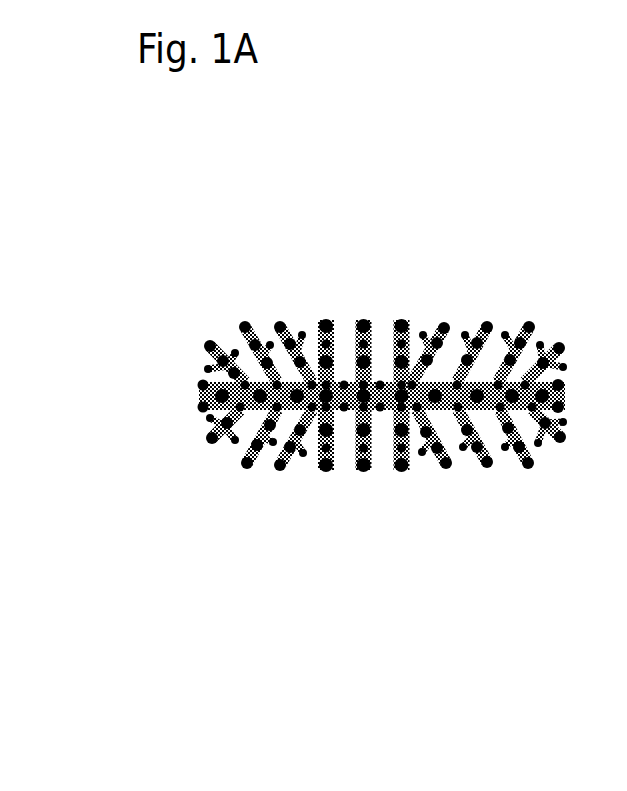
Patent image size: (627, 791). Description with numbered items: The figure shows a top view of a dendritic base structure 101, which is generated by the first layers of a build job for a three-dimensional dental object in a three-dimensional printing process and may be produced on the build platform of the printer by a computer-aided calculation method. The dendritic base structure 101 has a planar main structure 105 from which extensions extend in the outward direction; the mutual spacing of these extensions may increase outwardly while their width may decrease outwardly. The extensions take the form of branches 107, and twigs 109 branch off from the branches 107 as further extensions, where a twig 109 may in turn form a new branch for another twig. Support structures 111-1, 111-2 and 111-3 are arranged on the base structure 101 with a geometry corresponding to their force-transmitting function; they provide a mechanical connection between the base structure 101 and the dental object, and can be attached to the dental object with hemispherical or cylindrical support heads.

The dendritic base structure 101 is at (186, 329).
The planar main structure 105 is at (201, 405).
The branch 107 is at (325, 320).
The twig 109 is at (423, 330).
The support structure 111-1 is at (308, 460).
The support structure 111-2 is at (446, 465).
The support structure 111-3 is at (559, 441).